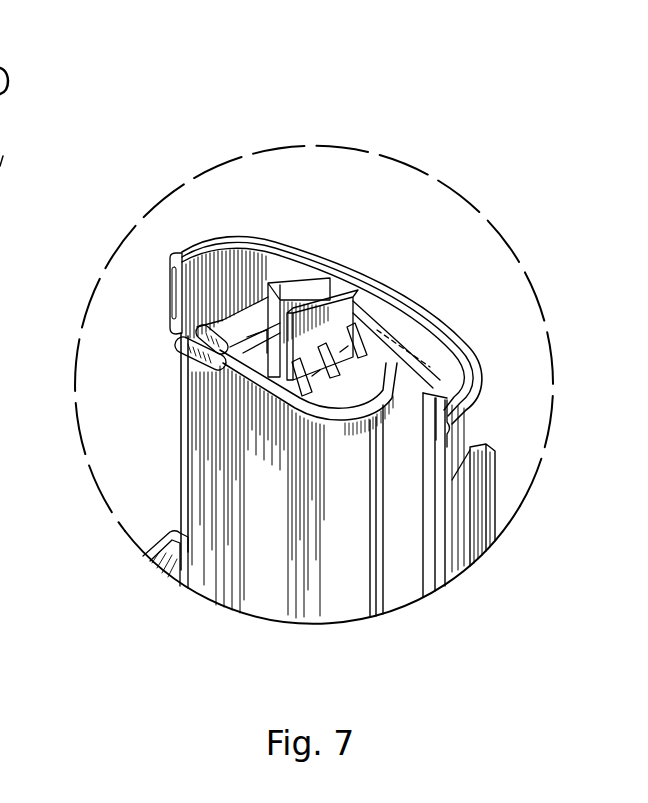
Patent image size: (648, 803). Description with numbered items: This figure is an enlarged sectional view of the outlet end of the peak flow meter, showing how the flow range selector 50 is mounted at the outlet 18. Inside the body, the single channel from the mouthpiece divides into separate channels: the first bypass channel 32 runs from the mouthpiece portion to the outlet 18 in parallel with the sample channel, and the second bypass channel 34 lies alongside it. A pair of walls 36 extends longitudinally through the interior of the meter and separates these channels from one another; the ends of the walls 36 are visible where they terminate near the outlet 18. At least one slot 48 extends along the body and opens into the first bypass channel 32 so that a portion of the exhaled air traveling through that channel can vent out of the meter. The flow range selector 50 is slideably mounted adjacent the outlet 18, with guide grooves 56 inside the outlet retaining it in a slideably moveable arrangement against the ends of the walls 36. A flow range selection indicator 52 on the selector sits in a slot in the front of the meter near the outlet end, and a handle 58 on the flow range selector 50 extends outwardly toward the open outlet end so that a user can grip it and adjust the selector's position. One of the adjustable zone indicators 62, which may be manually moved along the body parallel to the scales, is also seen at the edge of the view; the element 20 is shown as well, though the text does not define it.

The outlet 18 is at (292, 247).
The outer wall 20 is at (470, 513).
The first bypass channel 32 is at (223, 307).
The second bypass channel 34 is at (413, 447).
The walls 36 is at (267, 542).
The slot 48 is at (182, 430).
The flow range selector 50 is at (368, 380).
The flow range selection indicator 52 is at (180, 352).
The guide grooves 56 is at (427, 362).
The handle 58 is at (340, 323).
The adjustable zone indicators 62 is at (180, 587).